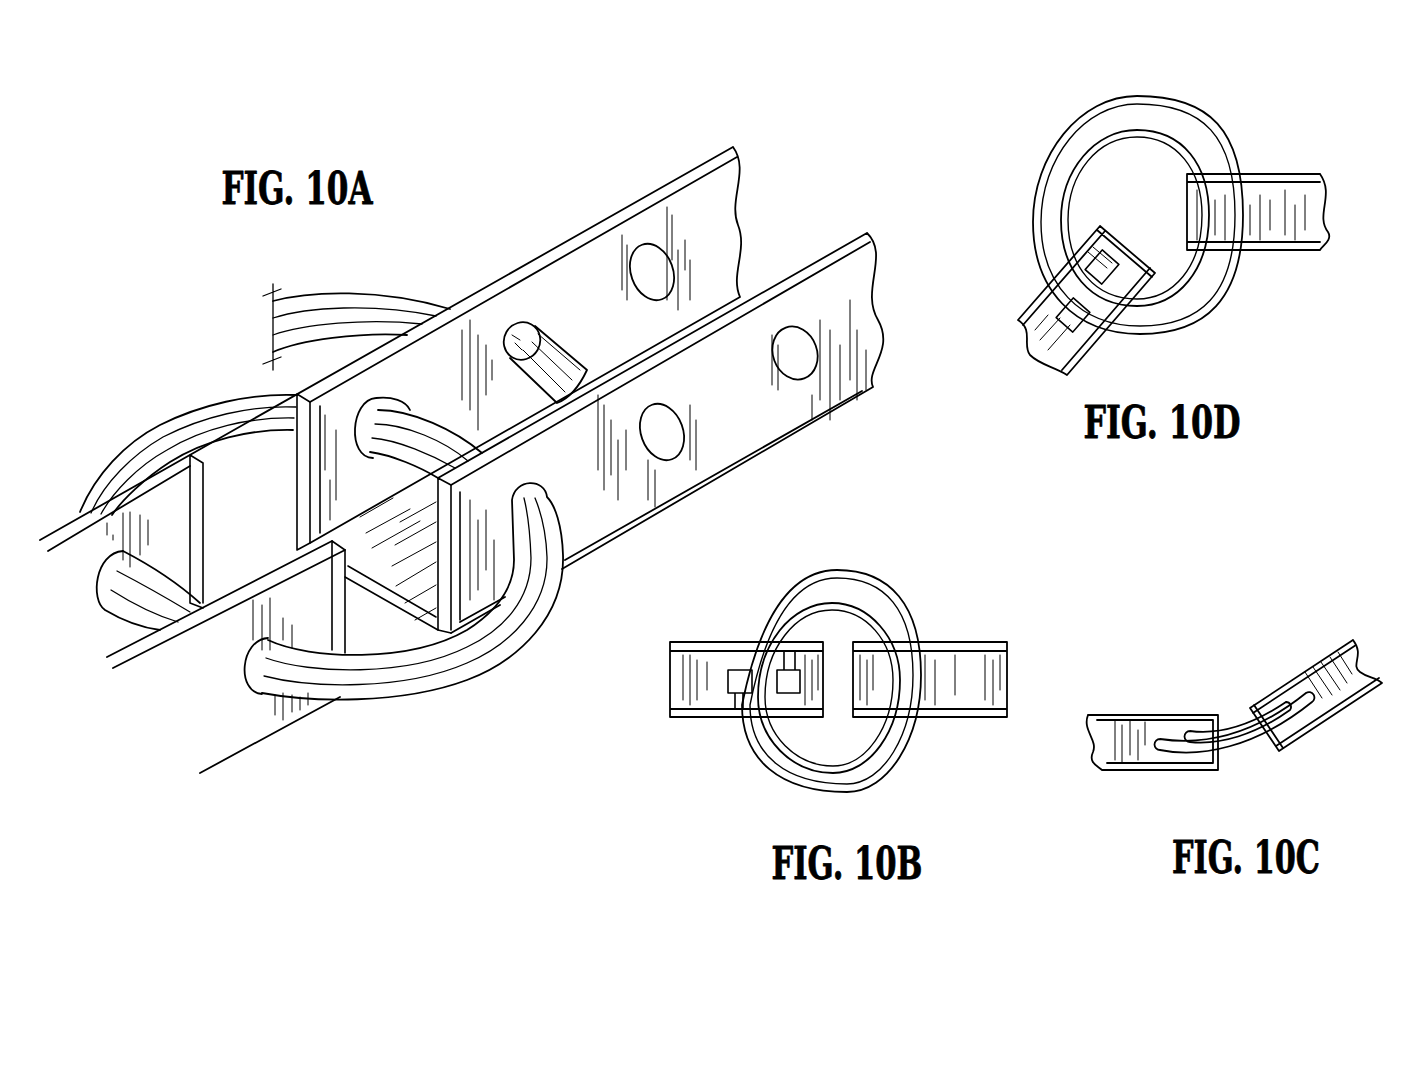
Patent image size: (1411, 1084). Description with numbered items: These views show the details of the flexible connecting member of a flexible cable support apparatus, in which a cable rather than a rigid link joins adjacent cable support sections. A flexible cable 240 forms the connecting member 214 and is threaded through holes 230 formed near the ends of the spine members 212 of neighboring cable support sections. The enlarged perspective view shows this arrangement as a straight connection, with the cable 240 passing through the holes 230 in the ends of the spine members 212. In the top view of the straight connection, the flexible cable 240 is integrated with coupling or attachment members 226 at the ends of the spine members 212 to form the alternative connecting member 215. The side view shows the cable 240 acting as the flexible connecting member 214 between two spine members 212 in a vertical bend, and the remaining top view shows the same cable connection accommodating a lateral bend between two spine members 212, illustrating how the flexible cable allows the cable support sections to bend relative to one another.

In FIG. 10A, the spine member 212 is at (665, 182).
In FIG. 10D, the spine member 212 is at (1272, 177).
In FIG. 10C, the spine member 212 is at (1327, 723).
In FIG. 10A, the connecting member 214 is at (328, 520).
In FIG. 10D, the connecting member 214 is at (1170, 197).
In FIG. 10C, the connecting member 214 is at (1235, 718).
In FIG. 10B, the connecting member 215 is at (739, 759).
In FIG. 10D, the connecting member 215 is at (1226, 311).
In FIG. 10B, the coupling or attachment member 226 is at (700, 642).
In FIG. 10A, the hole 230 is at (527, 327).
In FIG. 10A, the flexible cable 240 is at (364, 293).
In FIG. 10B, the flexible cable 240 is at (773, 780).
In FIG. 10D, the flexible cable 240 is at (1163, 97).
In FIG. 10C, the flexible cable 240 is at (1242, 753).